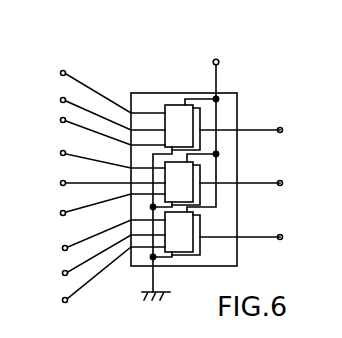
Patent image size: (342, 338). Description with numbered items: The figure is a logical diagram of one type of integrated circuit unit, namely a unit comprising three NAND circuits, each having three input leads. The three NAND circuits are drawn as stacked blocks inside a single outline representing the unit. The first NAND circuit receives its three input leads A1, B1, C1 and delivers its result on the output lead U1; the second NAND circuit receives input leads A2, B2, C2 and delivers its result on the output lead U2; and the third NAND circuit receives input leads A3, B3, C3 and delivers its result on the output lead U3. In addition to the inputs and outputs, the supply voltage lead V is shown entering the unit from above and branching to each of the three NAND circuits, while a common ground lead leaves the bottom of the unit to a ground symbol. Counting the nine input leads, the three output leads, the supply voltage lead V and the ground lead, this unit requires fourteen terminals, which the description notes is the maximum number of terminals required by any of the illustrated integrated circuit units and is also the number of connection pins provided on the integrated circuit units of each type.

The supply voltage lead V is at (205, 90).
The output lead of the first NAND circuit U1 is at (257, 129).
The output lead of the second NAND circuit U2 is at (257, 182).
The output lead of the third NAND circuit U3 is at (257, 236).
The first input lead of the first NAND circuit A1 is at (99, 86).
The second input lead of the first NAND circuit B1 is at (99, 109).
The third input lead of the first NAND circuit C1 is at (99, 127).
The first input lead of the second NAND circuit A2 is at (98, 154).
The second input lead of the second NAND circuit B2 is at (98, 181).
The third input lead of the second NAND circuit C2 is at (99, 209).
The first input lead of the third NAND circuit A3 is at (98, 240).
The second input lead of the third NAND circuit B3 is at (98, 260).
The third input lead of the third NAND circuit C3 is at (99, 280).